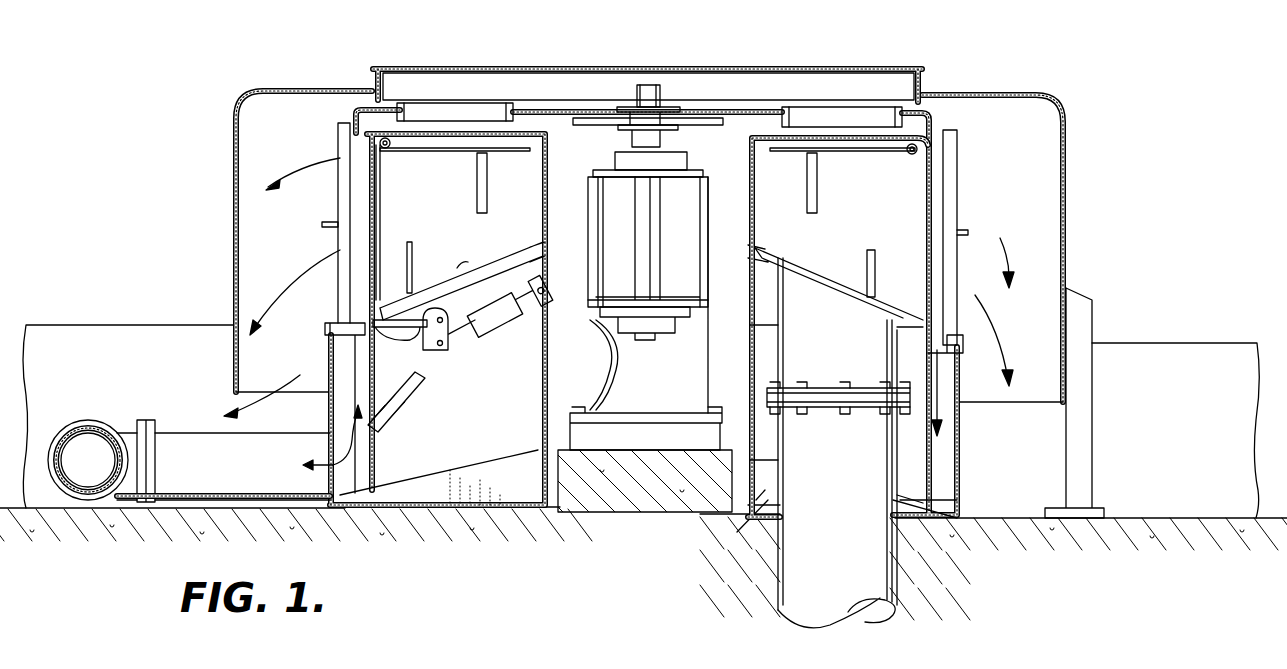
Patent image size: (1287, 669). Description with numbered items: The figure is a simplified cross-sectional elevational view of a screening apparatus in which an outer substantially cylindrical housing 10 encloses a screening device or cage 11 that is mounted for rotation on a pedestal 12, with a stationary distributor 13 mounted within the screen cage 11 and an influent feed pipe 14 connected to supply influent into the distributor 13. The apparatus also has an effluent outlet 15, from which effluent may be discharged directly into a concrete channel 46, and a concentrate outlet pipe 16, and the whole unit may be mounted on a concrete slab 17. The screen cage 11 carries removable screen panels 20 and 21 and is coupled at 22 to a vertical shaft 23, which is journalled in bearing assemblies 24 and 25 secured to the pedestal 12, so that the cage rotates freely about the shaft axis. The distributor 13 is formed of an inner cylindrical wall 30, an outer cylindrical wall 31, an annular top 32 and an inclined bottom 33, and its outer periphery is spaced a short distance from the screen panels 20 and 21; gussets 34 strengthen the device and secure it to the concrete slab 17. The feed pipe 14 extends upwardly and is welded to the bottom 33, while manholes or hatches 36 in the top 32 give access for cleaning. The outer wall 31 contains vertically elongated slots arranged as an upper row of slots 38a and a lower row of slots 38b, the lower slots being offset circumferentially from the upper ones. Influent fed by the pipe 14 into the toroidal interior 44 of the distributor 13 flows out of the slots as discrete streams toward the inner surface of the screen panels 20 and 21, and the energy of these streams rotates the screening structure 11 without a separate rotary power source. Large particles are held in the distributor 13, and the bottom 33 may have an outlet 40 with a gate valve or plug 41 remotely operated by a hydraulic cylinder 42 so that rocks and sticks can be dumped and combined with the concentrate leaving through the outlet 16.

The outer housing 10 is at (1078, 122).
The screening device 11 is at (548, 112).
The pedestal 12 is at (588, 170).
The stationary distributor 13 is at (355, 289).
The influent feed pipe 14 is at (802, 573).
The effluent outlet 15 is at (232, 402).
The concentrate outlet pipe 16 is at (200, 428).
The concrete slab 17 is at (649, 515).
The screen panel 20 is at (345, 196).
The screen panel 21 is at (342, 253).
The coupling 22 is at (662, 108).
The vertical shaft 23 is at (650, 85).
The bearing assembly 24 is at (684, 161).
The bearing assembly 25 is at (672, 330).
The inner cylindrical wall 30 is at (543, 398).
The outer cylindrical wall 31 is at (370, 455).
The annular top 32 is at (538, 150).
The inclined bottom 33 is at (457, 271).
The gusset 34 is at (490, 468).
The hatch 36 is at (488, 140).
The upper slot 38a is at (466, 181).
The lower slot 38b is at (413, 263).
The outlet 40 is at (415, 312).
The gate valve 41 is at (407, 342).
The hydraulic cylinder 42 is at (507, 330).
The toroidal interior 44 is at (843, 172).
The concrete channel 46 is at (178, 330).